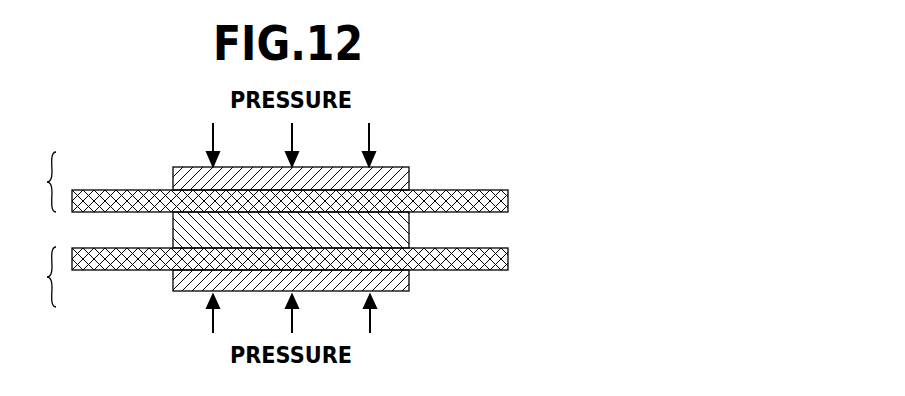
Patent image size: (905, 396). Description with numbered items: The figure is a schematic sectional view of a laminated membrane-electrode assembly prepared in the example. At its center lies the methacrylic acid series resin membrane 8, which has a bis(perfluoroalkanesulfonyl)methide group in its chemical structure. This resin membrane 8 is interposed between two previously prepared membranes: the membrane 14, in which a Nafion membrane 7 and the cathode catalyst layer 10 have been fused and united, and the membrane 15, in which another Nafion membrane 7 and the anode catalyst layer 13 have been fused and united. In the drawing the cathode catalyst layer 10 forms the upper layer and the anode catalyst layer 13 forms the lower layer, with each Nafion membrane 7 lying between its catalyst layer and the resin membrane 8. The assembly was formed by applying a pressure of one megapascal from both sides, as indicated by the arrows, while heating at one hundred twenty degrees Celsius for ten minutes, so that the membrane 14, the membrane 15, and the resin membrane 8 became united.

The Nafion membrane 7 is at (508, 197).
The methacrylic acid series resin membrane 8 is at (409, 228).
The cathode catalyst layer 10 is at (409, 176).
The anode catalyst layer 13 is at (409, 279).
The membrane 14 is at (33, 182).
The membrane 15 is at (33, 277).